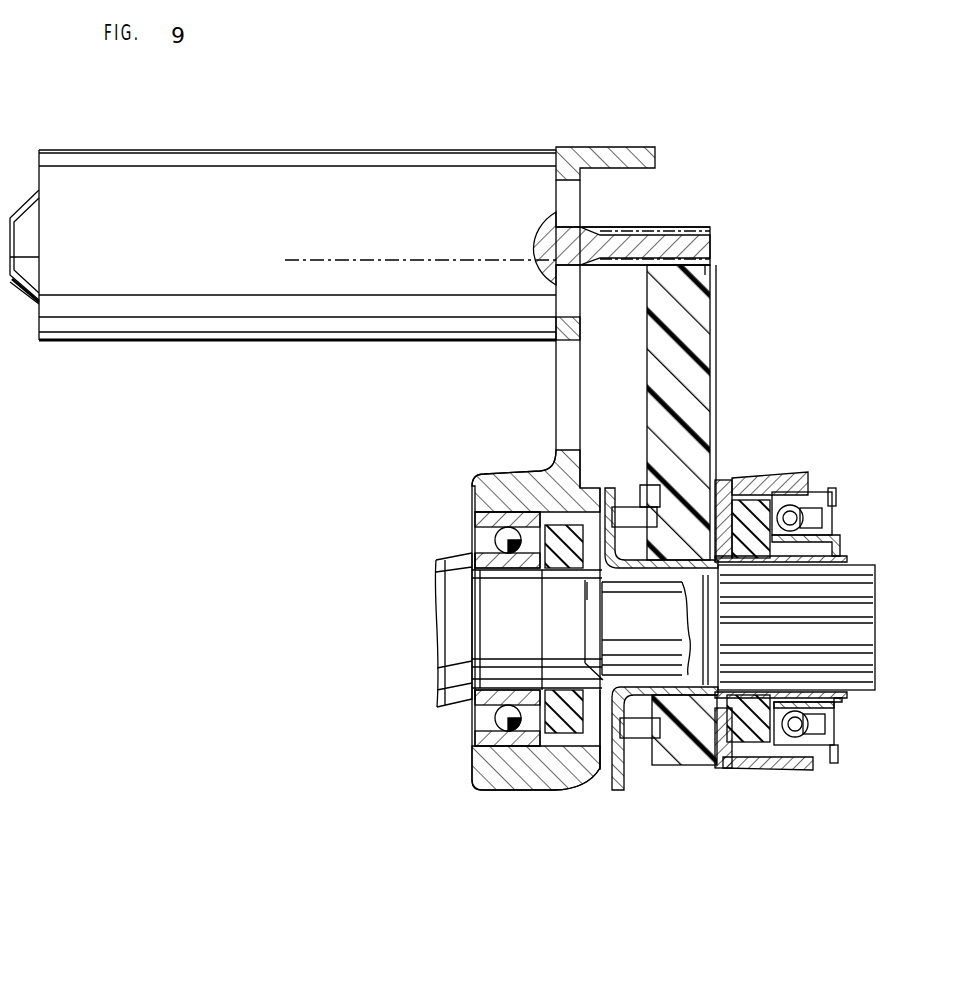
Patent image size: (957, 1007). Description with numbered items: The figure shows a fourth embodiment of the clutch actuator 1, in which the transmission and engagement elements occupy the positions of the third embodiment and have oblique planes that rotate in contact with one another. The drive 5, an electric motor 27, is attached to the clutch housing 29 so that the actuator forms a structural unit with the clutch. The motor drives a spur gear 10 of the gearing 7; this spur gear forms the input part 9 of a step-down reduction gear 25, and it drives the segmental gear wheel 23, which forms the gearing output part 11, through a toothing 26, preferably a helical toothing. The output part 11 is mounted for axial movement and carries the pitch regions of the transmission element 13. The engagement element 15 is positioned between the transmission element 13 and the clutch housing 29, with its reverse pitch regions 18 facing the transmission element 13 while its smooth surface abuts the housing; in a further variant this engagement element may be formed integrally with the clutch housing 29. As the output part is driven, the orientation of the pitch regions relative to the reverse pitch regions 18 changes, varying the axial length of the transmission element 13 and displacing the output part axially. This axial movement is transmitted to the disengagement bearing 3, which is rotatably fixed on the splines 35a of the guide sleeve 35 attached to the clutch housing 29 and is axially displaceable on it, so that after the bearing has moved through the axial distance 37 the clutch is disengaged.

The actuator 1 is at (493, 90).
The disengagement bearing 3 is at (830, 475).
The drive 5 is at (341, 345).
The gearing 7 is at (640, 268).
The input part 9 is at (700, 245).
The spur gear 10 is at (670, 230).
The output part 11 is at (690, 372).
The transmission element 13 is at (672, 748).
The engagement element 15 is at (630, 505).
The reverse pitch regions 18 is at (660, 490).
The segmental gear wheel 23 is at (582, 790).
The reduction gear 25 is at (725, 265).
The toothing 26 is at (710, 268).
The electric motor 27 is at (255, 305).
The clutch housing 29 is at (567, 418).
The guide sleeve 35 is at (813, 640).
The splines 35a is at (848, 640).
The distance 37 is at (620, 740).